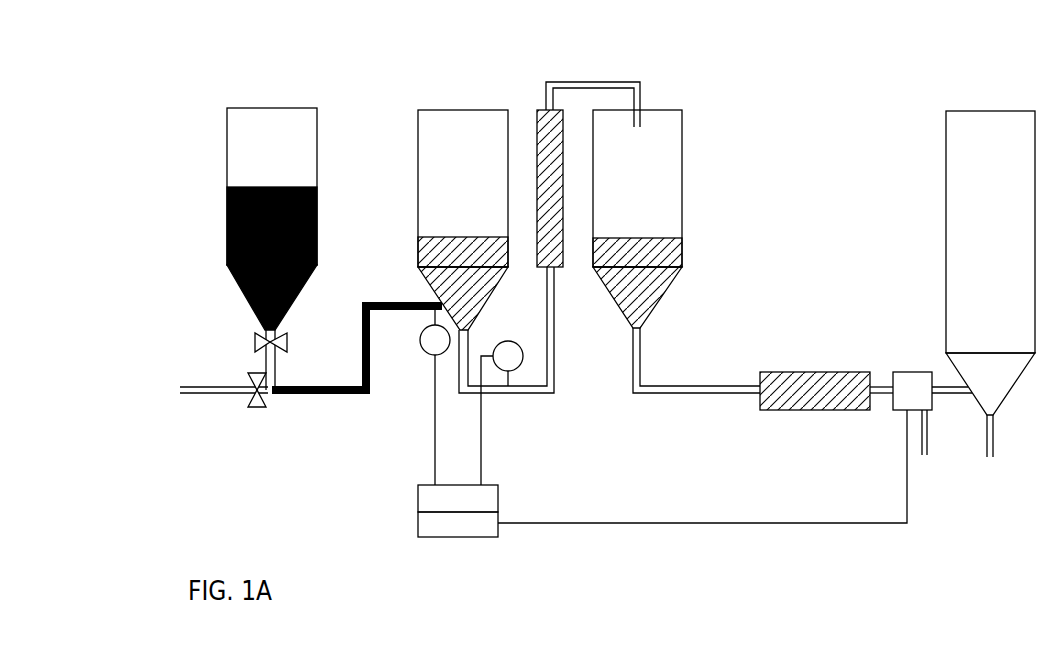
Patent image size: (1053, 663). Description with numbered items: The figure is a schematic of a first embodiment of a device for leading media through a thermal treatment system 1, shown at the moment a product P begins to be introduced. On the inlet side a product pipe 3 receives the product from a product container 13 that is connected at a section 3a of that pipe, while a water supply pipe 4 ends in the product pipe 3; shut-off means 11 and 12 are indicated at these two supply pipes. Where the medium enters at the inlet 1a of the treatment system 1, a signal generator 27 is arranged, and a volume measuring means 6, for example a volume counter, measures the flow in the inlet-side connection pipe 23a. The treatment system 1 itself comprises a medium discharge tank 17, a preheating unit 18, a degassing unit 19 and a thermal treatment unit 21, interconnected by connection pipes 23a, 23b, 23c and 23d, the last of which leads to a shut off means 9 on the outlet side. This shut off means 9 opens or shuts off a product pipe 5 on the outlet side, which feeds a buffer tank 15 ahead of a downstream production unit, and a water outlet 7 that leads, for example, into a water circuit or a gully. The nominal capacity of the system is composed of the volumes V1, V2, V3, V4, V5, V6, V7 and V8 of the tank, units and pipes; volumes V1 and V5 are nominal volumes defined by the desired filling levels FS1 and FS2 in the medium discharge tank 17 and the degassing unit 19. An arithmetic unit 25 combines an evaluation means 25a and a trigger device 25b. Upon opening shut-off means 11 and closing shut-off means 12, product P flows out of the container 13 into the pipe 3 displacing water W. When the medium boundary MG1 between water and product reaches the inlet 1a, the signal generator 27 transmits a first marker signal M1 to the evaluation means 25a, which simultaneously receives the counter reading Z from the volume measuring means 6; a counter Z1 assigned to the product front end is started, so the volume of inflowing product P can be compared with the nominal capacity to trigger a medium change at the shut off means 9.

The thermal treatment system 1 is at (736, 72).
The inlet of the treatment system 1a is at (404, 342).
The product pipe on the inlet side 3 is at (368, 301).
The section of the product pipe 3a is at (277, 362).
The water supply pipe 4 is at (193, 386).
The product pipe on the outlet side 5 is at (957, 394).
The volume measuring means 6 is at (502, 413).
The water outlet 7 is at (929, 437).
The shut off means on the outlet side 9 is at (907, 400).
The shut-off means 11 is at (253, 342).
The shut-off means 12 is at (257, 409).
The product container 13 is at (263, 139).
The buffer tank 15 is at (981, 141).
The medium discharge tank 17 is at (454, 139).
The preheating unit 18 is at (537, 112).
The degassing unit 19 is at (649, 139).
The thermal treatment unit 21 is at (813, 371).
The connection pipe on the inlet side 23a is at (520, 394).
The connection pipe 23b is at (602, 81).
The connection pipe 23c is at (688, 394).
The connection pipe 23d is at (882, 394).
The arithmetic unit 25 is at (645, 473).
The evaluation means 25a is at (446, 509).
The trigger device 25b is at (446, 534).
The signal generator 27 is at (435, 397).
The desired filling level FS1 is at (416, 238).
The desired filling level FS2 is at (686, 238).
The medium boundary MG1 is at (434, 300).
The volume V1 is at (495, 301).
The volume V2 is at (559, 372).
The volume V3 is at (569, 258).
The volume V4 is at (577, 74).
The volume V5 is at (668, 299).
The volume V6 is at (697, 380).
The volume V7 is at (850, 366).
The volume V8 is at (883, 380).
The first marker signal M1 is at (425, 377).
The product P is at (340, 405).
The counter reading Z is at (472, 420).
The counter Z1 is at (506, 498).
The water W is at (924, 465).